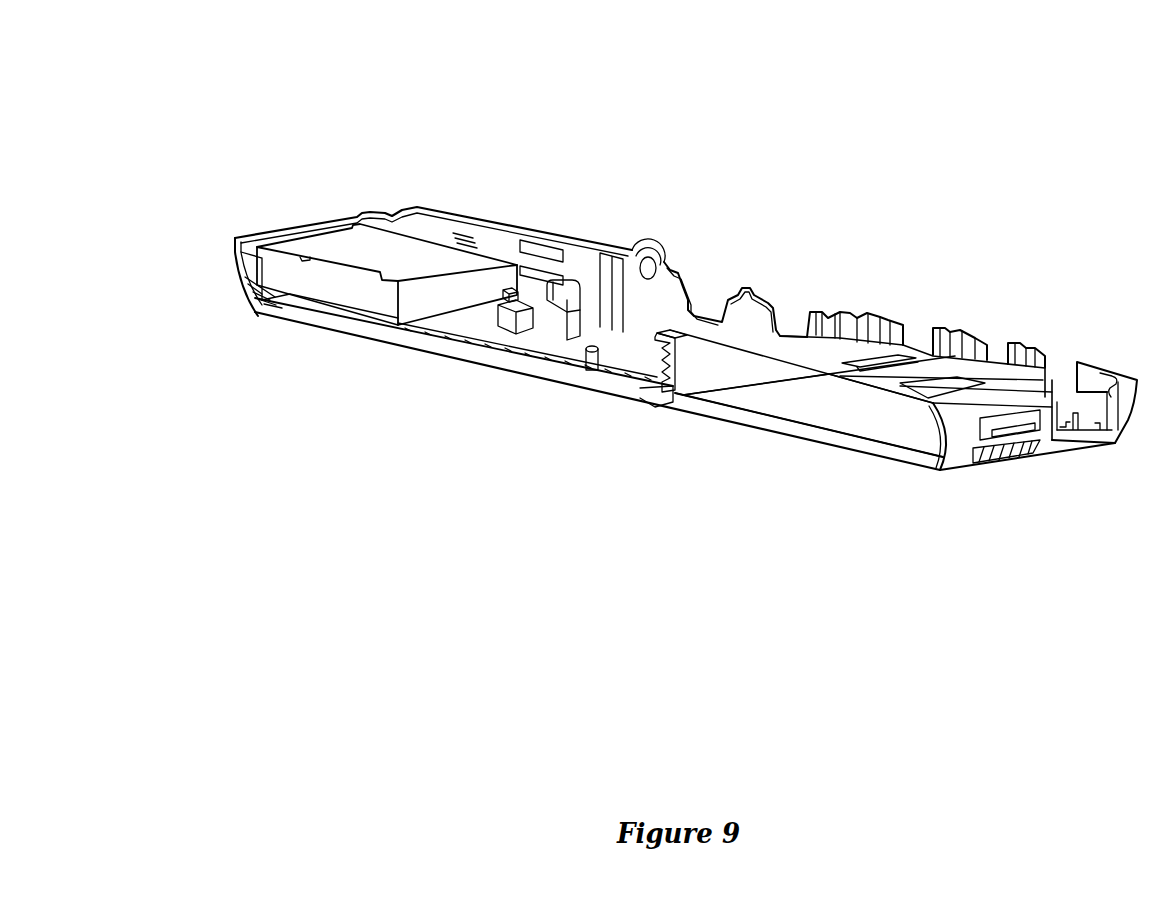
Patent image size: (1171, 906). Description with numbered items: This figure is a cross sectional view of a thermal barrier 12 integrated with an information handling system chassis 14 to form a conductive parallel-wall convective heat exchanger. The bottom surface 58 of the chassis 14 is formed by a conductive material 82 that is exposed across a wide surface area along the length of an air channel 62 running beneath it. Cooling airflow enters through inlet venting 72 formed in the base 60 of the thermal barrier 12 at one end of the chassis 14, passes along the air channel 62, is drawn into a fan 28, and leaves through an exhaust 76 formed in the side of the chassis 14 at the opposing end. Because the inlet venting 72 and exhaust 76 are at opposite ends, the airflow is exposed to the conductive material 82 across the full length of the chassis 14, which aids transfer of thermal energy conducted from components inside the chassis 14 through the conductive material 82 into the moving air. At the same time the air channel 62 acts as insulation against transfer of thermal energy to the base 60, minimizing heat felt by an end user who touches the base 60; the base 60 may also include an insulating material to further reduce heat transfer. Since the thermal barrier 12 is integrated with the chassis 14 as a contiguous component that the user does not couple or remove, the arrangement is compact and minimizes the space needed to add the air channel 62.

The information handling system chassis 14 is at (1140, 378).
The fan 28 is at (387, 223).
The exhaust 76 is at (470, 247).
The conductive material 82 is at (562, 355).
The thermal barrier 12 is at (387, 347).
The bottom surface 58 is at (465, 343).
The base 60 is at (530, 380).
The air channel 62 is at (730, 415).
The inlet venting 72 is at (1012, 463).